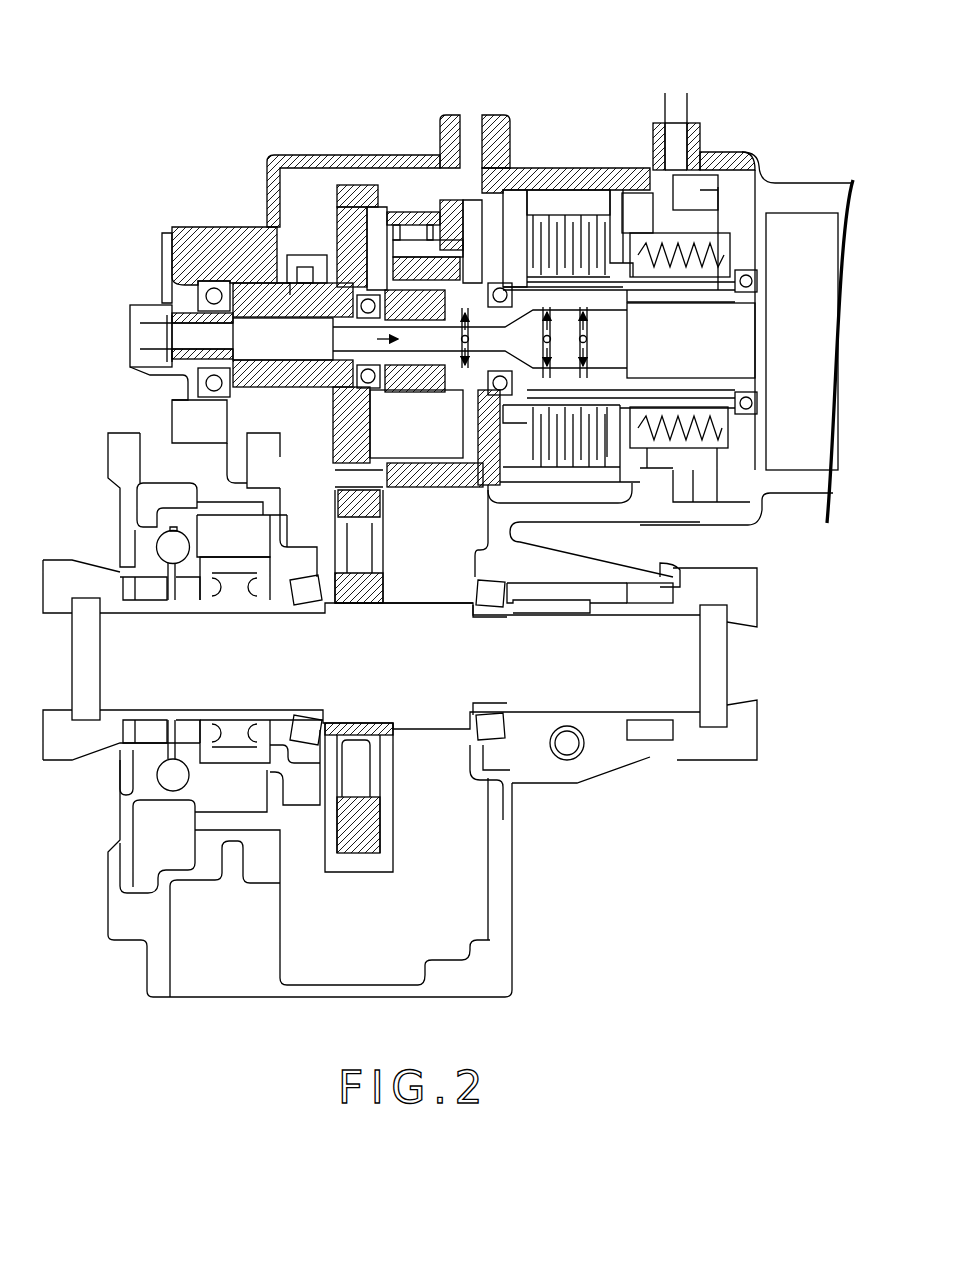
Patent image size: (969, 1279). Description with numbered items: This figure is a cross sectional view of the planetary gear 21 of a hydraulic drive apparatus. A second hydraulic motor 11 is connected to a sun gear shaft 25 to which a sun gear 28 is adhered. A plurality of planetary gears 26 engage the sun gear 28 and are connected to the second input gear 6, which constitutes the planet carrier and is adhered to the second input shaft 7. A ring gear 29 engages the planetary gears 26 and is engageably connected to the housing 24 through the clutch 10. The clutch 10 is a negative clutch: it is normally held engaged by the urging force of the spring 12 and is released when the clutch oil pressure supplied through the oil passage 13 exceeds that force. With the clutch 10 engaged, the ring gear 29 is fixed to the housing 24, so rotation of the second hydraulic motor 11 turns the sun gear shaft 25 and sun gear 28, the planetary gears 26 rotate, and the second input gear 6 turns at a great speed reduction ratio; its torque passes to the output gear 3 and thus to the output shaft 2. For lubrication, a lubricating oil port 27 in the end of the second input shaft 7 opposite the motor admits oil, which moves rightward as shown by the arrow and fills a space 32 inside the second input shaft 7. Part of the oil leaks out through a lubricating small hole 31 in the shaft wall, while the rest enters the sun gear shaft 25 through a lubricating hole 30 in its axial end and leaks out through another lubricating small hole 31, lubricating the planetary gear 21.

The output shaft 2 is at (118, 623).
The output gear 3 is at (368, 501).
The second input gear 6 is at (357, 210).
The second input shaft 7 is at (150, 368).
The clutch 10 is at (548, 210).
The second hydraulic motor 11 is at (805, 232).
The spring 12 is at (710, 250).
The oil passage 13 is at (665, 118).
The planetary gear 21 is at (484, 88).
The housing 24 is at (580, 172).
The sun gear shaft 25 is at (337, 378).
The planetary gears 26 is at (380, 237).
The lubricating oil port 27 is at (150, 322).
The sun gear 28 is at (408, 373).
The ring gear 29 is at (397, 185).
The lubricating hole 30 is at (273, 373).
The lubricating small hole 31 is at (267, 307).
The space 32 is at (280, 322).